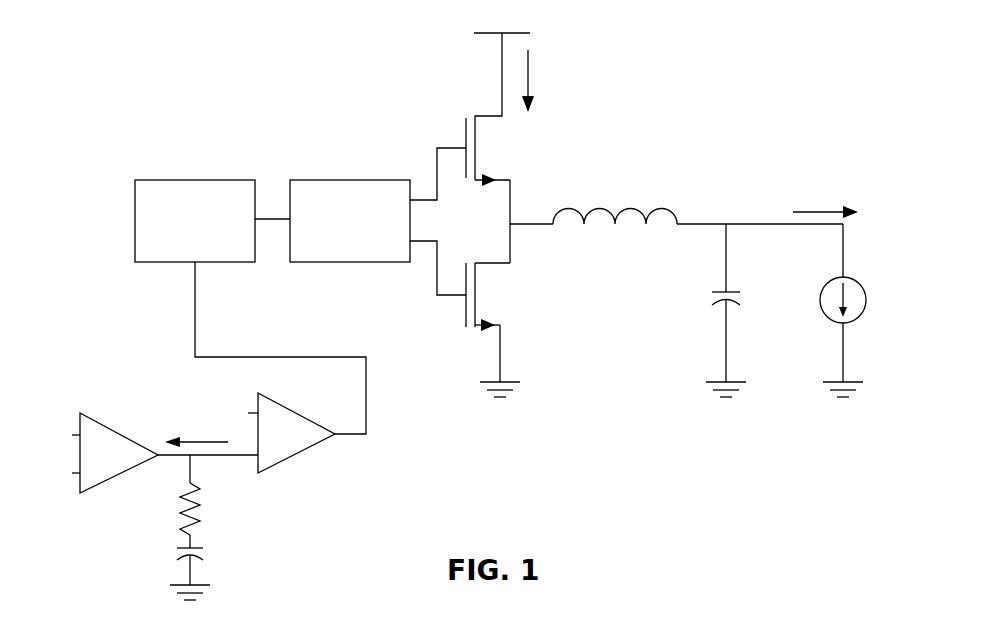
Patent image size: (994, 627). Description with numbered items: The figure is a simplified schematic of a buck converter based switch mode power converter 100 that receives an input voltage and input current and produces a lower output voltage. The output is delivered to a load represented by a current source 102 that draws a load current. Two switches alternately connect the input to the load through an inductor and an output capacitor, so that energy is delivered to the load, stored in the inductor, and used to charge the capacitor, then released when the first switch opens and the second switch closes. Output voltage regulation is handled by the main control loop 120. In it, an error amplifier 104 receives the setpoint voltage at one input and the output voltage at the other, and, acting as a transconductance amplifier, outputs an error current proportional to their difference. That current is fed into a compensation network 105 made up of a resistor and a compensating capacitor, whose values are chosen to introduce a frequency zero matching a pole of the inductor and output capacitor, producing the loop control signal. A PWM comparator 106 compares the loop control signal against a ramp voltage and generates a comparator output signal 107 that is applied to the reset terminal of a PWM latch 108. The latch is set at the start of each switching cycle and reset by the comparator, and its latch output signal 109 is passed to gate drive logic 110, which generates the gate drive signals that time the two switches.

The switch mode power converter 100 is at (349, 81).
The current source 102 is at (829, 278).
The error amplifier 104 is at (128, 437).
The compensation network 105 is at (200, 538).
The PWM comparator 106 is at (299, 455).
The comparator output signal 107 is at (300, 357).
The PWM latch 108 is at (188, 180).
The PWM latch output signal 109 is at (272, 224).
The gate drive logic 110 is at (372, 180).
The main control loop 120 is at (293, 508).